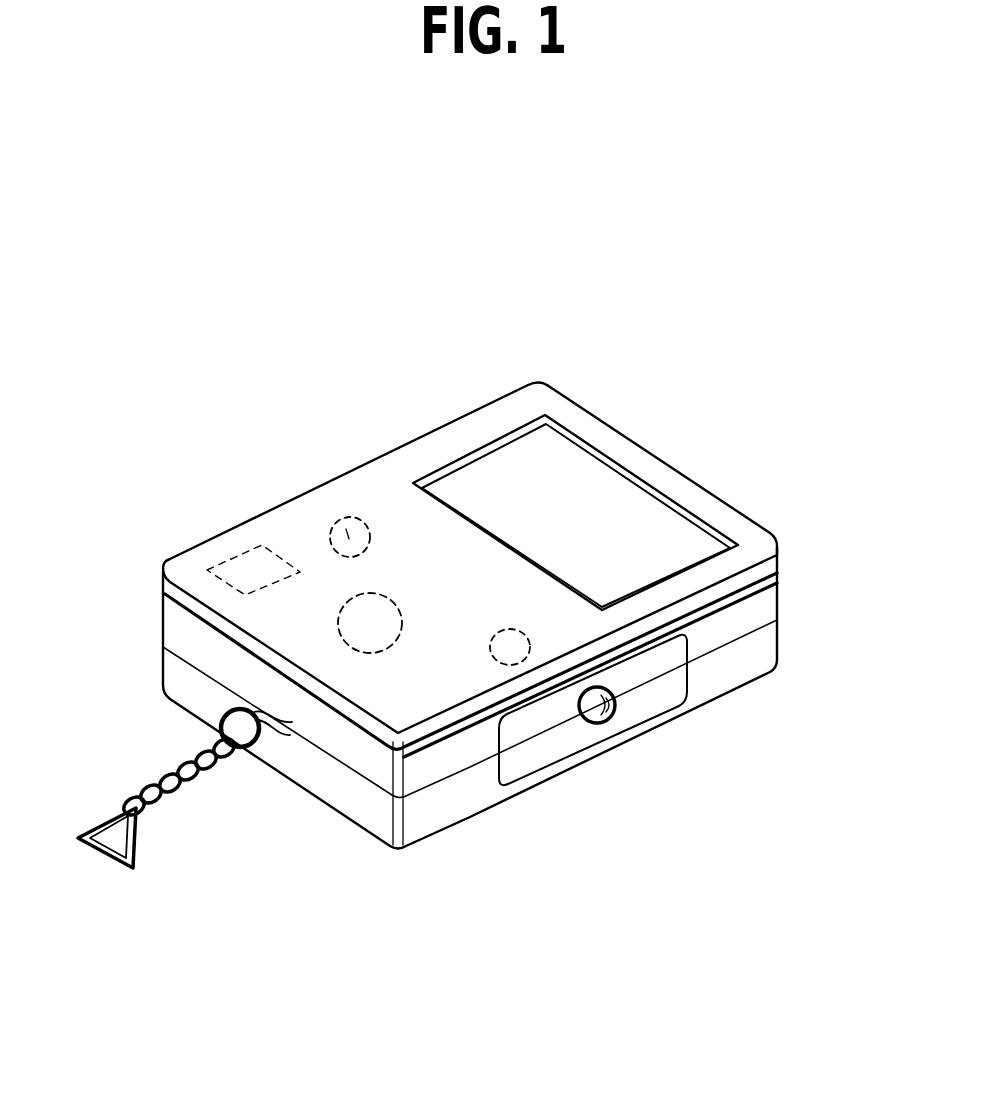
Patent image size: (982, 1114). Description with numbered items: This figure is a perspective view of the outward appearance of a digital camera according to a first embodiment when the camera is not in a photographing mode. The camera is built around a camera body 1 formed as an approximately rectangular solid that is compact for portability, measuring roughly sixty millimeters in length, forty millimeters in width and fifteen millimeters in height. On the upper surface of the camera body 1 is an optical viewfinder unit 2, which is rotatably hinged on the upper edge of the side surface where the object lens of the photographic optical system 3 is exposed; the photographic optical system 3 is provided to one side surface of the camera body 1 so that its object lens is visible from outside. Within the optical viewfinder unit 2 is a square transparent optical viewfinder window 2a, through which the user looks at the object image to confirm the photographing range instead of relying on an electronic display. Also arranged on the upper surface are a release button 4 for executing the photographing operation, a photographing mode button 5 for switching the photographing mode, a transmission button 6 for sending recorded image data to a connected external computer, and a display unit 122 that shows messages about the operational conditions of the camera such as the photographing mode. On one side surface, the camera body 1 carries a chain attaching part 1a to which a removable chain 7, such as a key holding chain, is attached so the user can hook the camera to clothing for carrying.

The camera body 1 is at (780, 600).
The chain attaching part 1a is at (272, 752).
The optical viewfinder unit 2 is at (778, 564).
The transparent optical viewfinder window 2a is at (507, 473).
The photographic optical system 3 is at (617, 713).
The release button 4 is at (347, 642).
The photographing mode button 5 is at (345, 520).
The transmission button 6 is at (528, 664).
The chain 7 is at (150, 806).
The display unit 122 is at (245, 550).